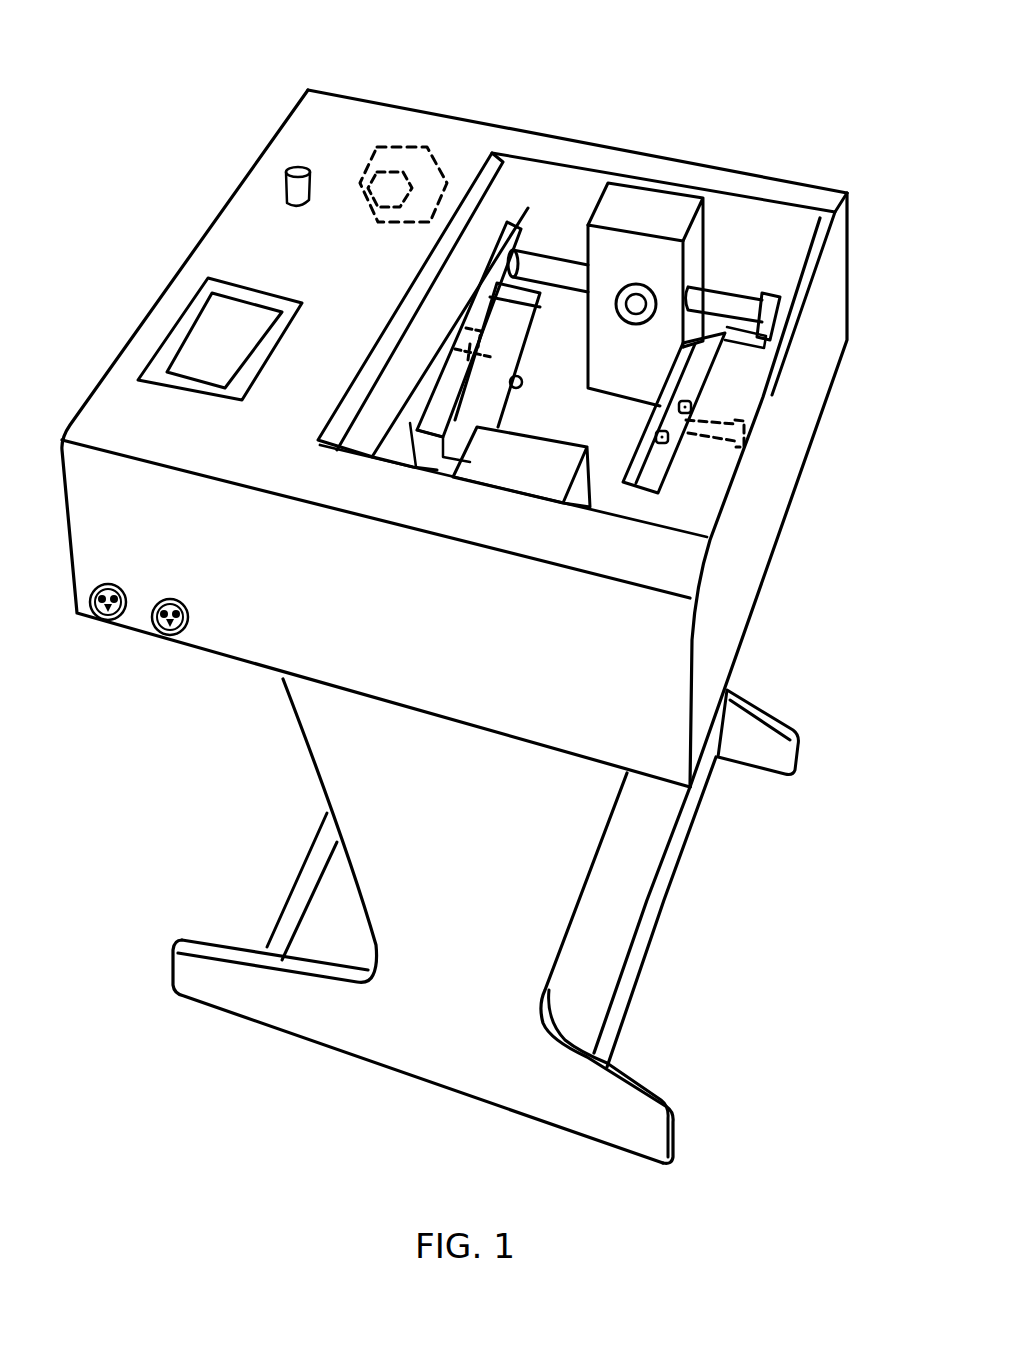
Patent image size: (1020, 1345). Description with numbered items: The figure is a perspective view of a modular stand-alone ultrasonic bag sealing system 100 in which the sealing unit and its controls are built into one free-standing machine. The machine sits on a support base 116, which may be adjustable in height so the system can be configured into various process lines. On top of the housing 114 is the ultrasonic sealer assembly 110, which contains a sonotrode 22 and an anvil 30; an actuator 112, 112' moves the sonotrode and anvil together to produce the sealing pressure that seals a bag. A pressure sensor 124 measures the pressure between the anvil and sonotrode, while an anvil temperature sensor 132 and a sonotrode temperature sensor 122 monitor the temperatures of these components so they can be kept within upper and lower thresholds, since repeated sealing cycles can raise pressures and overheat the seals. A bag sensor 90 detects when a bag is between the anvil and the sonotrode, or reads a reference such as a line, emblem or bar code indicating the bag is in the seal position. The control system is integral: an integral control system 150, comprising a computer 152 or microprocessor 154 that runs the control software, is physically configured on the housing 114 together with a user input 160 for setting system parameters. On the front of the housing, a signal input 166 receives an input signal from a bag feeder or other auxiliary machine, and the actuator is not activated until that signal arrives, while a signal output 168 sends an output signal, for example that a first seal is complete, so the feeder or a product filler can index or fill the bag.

The modular stand-alone ultrasonic bag sealing system 100 is at (180, 190).
The housing 114 is at (300, 237).
The user input 160 is at (237, 337).
The microprocessor 154 is at (387, 183).
The computer 152 is at (387, 183).
The integral control system 150 is at (416, 190).
The anvil 30 is at (583, 332).
The bag sensor 90 is at (640, 305).
The ultrasonic sealer assembly 110 is at (723, 227).
The actuator 112' is at (420, 329).
The anvil temperature sensor 132 is at (513, 400).
The sonotrode 22 is at (684, 385).
The pressure sensor 124 is at (689, 402).
The sonotrode temperature sensor 122 is at (665, 443).
The actuator 112 is at (782, 488).
The signal input 166 is at (112, 624).
The signal output 168 is at (173, 638).
The support base 116 is at (543, 910).